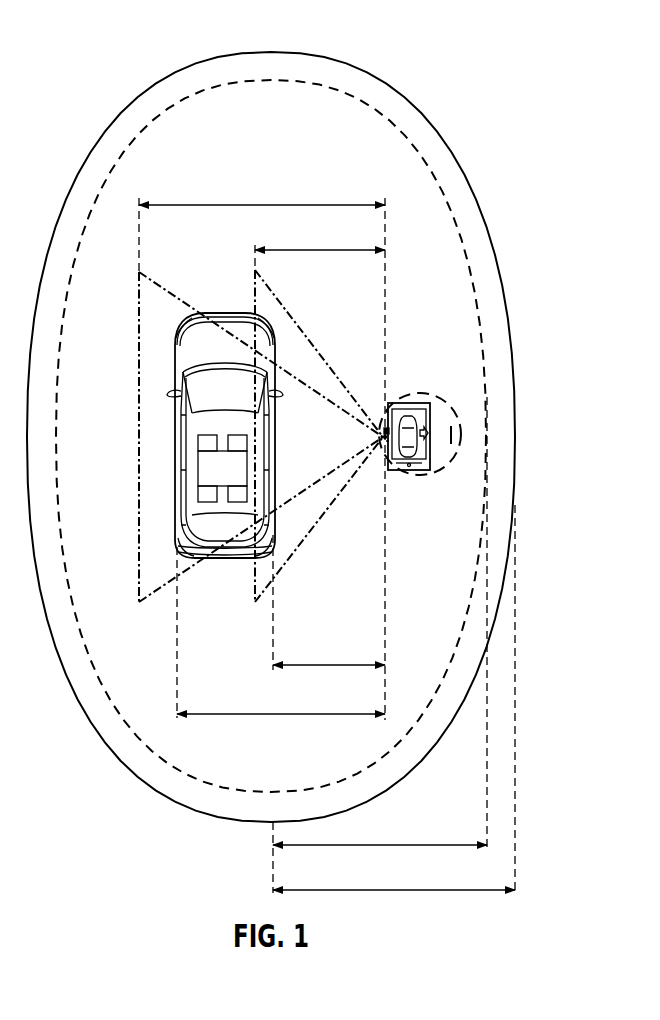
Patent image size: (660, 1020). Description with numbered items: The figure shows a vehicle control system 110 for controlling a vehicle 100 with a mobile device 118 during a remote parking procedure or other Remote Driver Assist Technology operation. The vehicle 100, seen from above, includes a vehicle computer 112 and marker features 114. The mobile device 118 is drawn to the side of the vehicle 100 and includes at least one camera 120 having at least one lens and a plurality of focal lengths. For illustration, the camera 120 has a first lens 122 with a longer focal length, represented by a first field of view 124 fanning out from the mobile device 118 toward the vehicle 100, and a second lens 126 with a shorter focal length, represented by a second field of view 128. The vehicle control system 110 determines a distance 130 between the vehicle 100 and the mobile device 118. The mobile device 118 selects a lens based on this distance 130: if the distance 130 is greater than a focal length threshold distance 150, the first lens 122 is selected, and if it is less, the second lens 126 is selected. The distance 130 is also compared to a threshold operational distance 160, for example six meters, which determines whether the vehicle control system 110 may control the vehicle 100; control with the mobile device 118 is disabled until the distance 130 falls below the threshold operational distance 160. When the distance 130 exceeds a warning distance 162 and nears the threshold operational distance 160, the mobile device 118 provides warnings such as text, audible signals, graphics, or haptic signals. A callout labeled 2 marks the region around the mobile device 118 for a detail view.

The vehicle 100 is at (221, 454).
The vehicle control system 110 is at (322, 242).
The vehicle computer 112 is at (243, 480).
The marker features 114 is at (182, 322).
The mobile device 118 is at (432, 399).
The camera 120 is at (374, 418).
The first lens 122 is at (386, 450).
The first field of view 124 is at (138, 544).
The second lens 126 is at (378, 437).
The second field of view 128 is at (287, 314).
The distance 130 is at (302, 668).
The focal length threshold distance 150 is at (278, 718).
The threshold operational distance 160 is at (504, 555).
The warning distance 162 is at (473, 580).
The detail view reference 2 is at (452, 437).